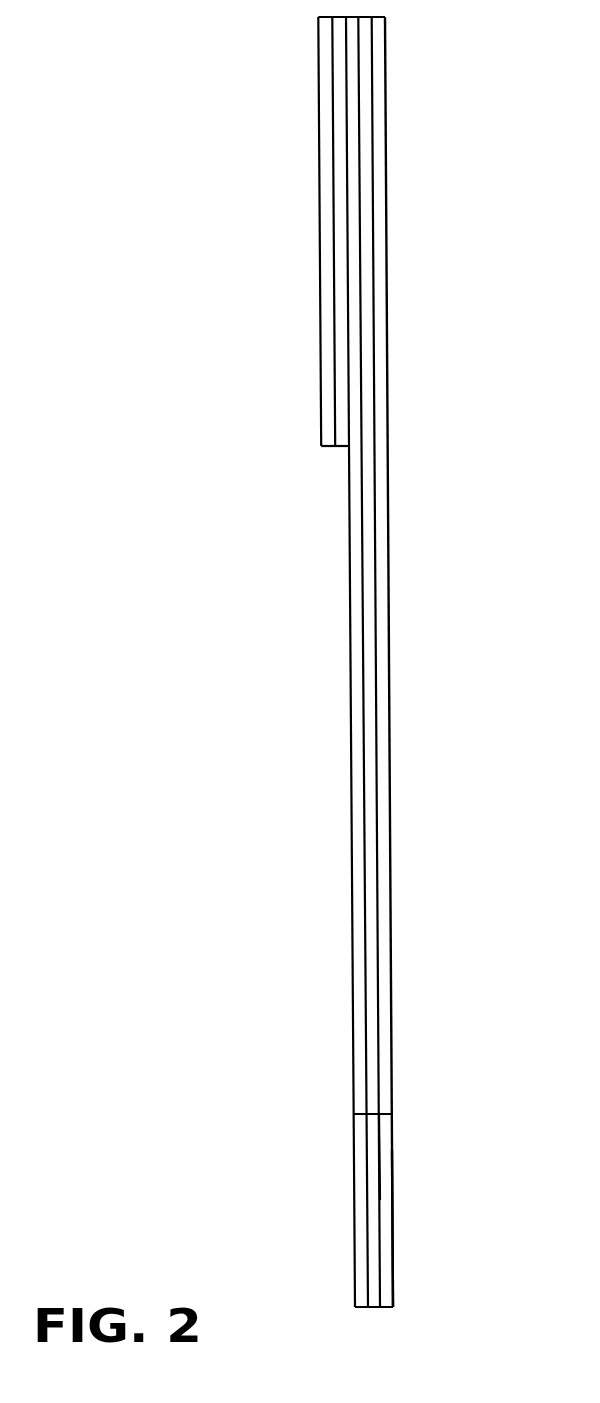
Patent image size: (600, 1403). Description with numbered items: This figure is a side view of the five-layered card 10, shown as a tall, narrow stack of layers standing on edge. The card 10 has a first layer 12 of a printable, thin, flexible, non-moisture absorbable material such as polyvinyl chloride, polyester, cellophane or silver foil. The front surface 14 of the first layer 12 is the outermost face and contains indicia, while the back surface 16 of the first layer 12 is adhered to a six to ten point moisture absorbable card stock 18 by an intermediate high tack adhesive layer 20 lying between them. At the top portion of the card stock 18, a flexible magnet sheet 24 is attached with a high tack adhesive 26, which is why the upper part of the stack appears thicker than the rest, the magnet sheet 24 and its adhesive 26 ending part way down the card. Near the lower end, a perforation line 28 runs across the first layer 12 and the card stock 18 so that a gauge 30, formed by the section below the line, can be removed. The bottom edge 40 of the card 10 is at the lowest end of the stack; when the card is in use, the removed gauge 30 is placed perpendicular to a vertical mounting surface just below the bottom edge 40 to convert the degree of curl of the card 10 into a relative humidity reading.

The card 10 is at (448, 548).
The first layer 12 is at (387, 1308).
The front surface 14 is at (392, 886).
The back surface 16 is at (378, 1028).
The card stock 18 is at (357, 1308).
The intermediate high tack adhesive layer 20 is at (372, 1308).
The flexible magnet sheet 24 is at (330, 447).
The high tack adhesive 26 is at (340, 458).
The perforation line 28 is at (393, 1113).
The gauge 30 is at (394, 1236).
The bottom edge 40 is at (388, 1116).